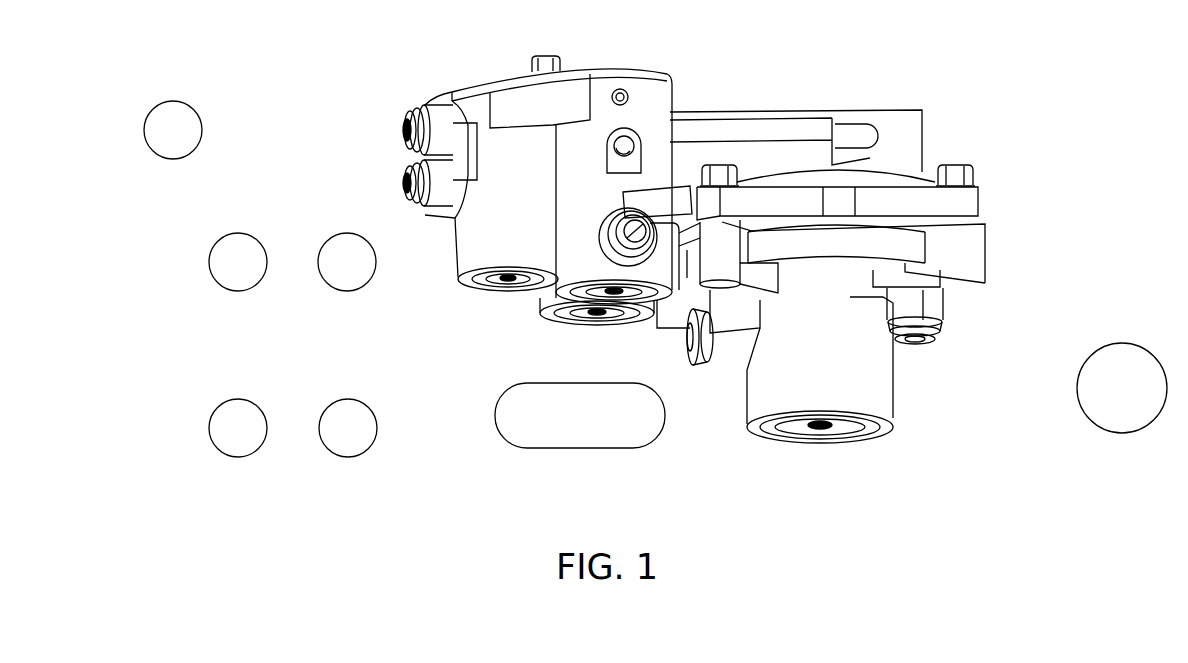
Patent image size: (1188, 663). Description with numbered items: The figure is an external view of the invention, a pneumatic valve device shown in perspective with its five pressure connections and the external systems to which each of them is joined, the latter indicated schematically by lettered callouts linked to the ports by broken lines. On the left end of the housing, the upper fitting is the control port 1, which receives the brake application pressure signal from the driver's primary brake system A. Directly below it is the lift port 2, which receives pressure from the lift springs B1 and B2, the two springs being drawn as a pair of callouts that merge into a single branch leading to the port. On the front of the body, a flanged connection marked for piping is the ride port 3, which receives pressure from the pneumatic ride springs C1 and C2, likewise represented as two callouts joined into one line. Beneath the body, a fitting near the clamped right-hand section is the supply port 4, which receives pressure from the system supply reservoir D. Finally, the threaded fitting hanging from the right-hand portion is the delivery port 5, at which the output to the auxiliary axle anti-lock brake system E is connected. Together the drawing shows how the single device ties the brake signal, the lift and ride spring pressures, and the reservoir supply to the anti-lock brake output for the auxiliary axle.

The control port 1 is at (407, 120).
The lift port 2 is at (410, 200).
The ride port 3 is at (660, 213).
The supply port 4 is at (693, 370).
The delivery port 5 is at (943, 340).
The primary brake system A is at (405, 130).
The lift spring B1 is at (405, 181).
The lift spring B2 is at (347, 181).
The pneumatic ride spring C1 is at (660, 196).
The pneumatic ride spring C2 is at (348, 345).
The system supply reservoir D is at (683, 336).
The auxiliary axle anti-lock brake system E is at (918, 343).